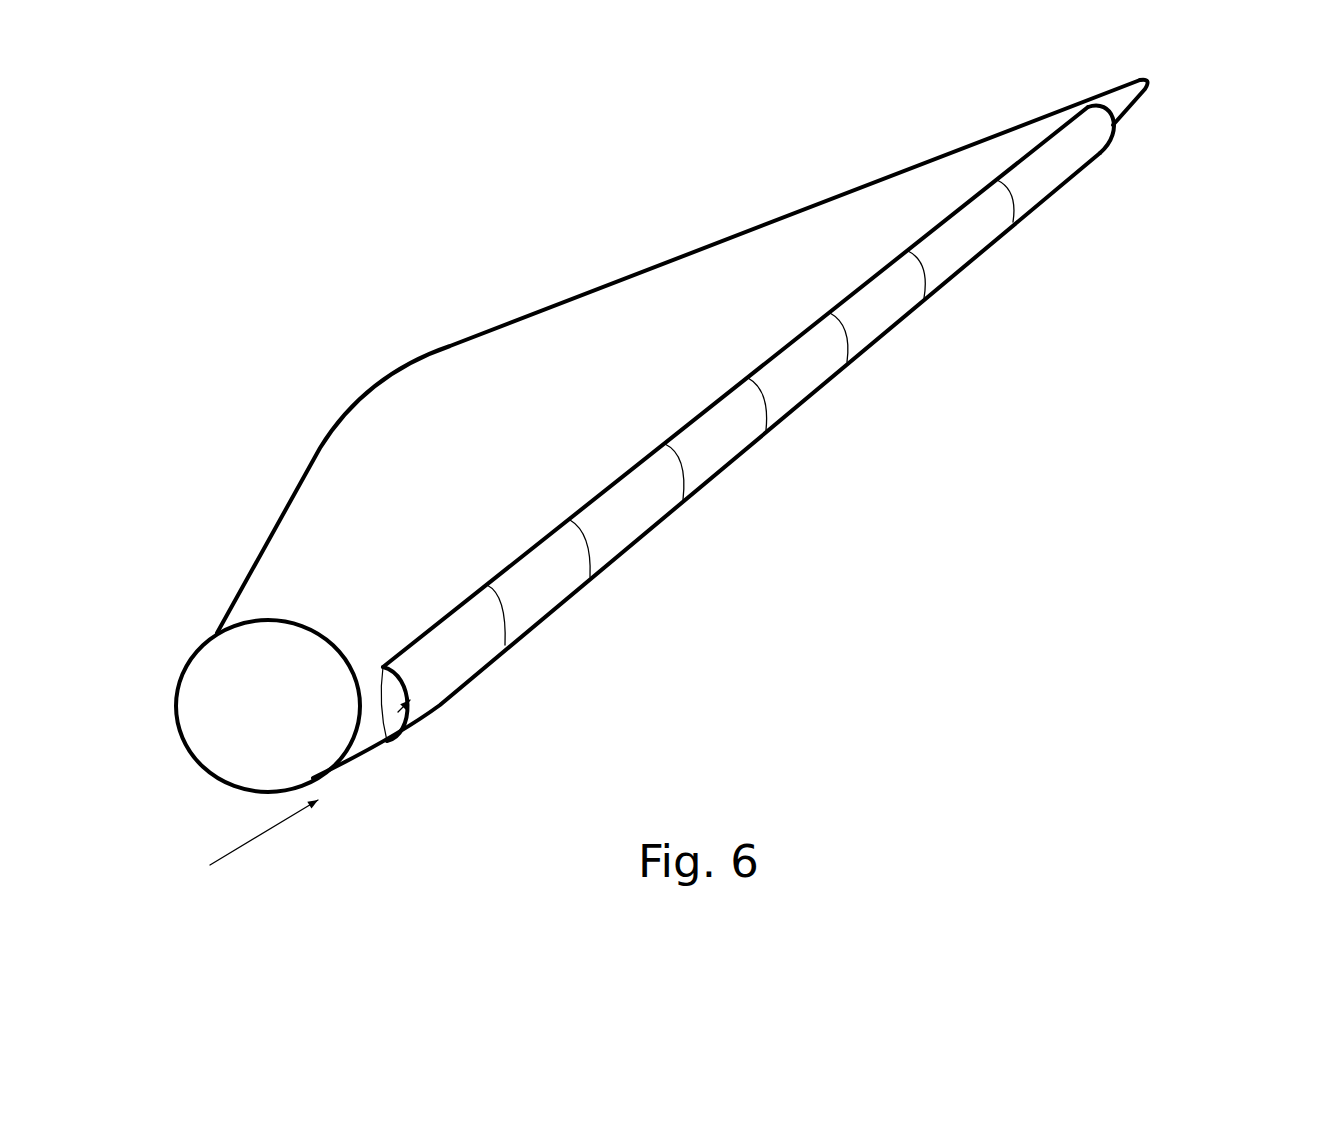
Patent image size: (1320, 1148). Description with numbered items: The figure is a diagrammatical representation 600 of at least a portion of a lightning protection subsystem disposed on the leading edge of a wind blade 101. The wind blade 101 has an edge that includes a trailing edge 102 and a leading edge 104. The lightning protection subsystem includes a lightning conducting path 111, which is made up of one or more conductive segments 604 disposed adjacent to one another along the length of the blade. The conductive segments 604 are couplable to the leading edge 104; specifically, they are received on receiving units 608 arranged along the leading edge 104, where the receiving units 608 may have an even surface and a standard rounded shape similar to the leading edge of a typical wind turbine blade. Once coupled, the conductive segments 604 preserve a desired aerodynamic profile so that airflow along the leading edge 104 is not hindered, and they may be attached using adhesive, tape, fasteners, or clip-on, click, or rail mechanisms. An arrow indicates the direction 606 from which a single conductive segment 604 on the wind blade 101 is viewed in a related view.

The wind blade 101 is at (297, 487).
The trailing edge 102 is at (517, 317).
The leading edge 104 is at (1117, 105).
The lightning conducting path 111 is at (447, 666).
The diagrammatical representation 600 is at (1027, 520).
The conductive segments 604 is at (718, 450).
The direction 606 is at (252, 842).
The receiving units 608 is at (363, 718).